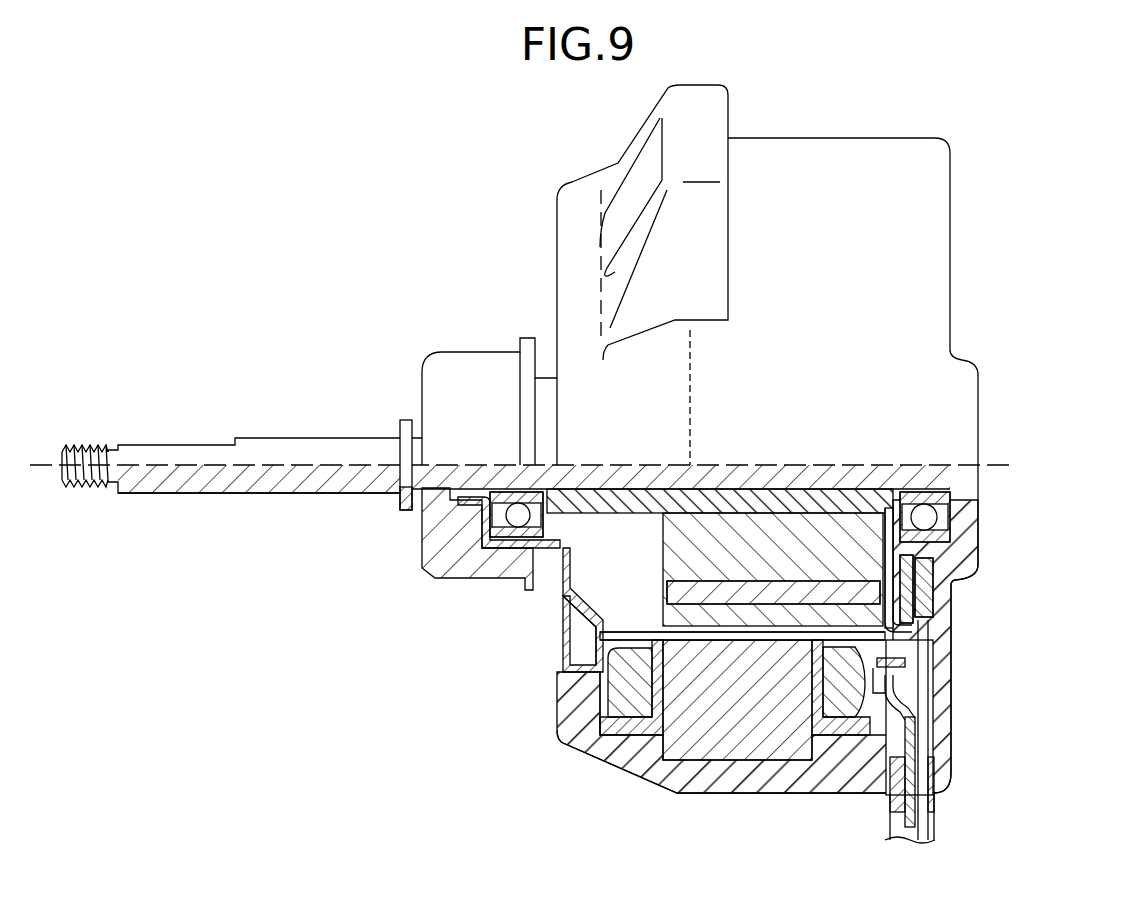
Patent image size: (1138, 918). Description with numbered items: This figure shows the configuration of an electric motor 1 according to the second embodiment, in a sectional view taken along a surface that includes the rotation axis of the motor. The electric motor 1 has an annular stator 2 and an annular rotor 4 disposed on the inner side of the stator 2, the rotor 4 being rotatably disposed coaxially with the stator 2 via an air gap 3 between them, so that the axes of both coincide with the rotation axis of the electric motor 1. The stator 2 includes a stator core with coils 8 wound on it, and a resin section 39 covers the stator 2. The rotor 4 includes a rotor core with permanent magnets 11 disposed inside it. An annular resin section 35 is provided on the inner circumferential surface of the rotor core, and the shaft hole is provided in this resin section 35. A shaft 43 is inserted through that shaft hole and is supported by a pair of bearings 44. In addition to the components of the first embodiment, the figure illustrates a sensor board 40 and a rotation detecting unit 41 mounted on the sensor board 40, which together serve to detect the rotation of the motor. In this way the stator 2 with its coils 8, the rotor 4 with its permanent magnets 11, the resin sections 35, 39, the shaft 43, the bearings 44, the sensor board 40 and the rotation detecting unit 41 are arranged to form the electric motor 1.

The electric motor 1 is at (1040, 212).
The stator 2 is at (672, 740).
The air gap 3 is at (660, 615).
The rotor 4 is at (720, 613).
The coils 8 is at (625, 688).
The permanent magnets 11 is at (777, 597).
The resin section 35 is at (622, 505).
The resin section 39 is at (678, 775).
The sensor board 40 is at (906, 575).
The rotation detecting unit 41 is at (926, 595).
The shaft 43 is at (270, 438).
The bearings 44 is at (497, 533).